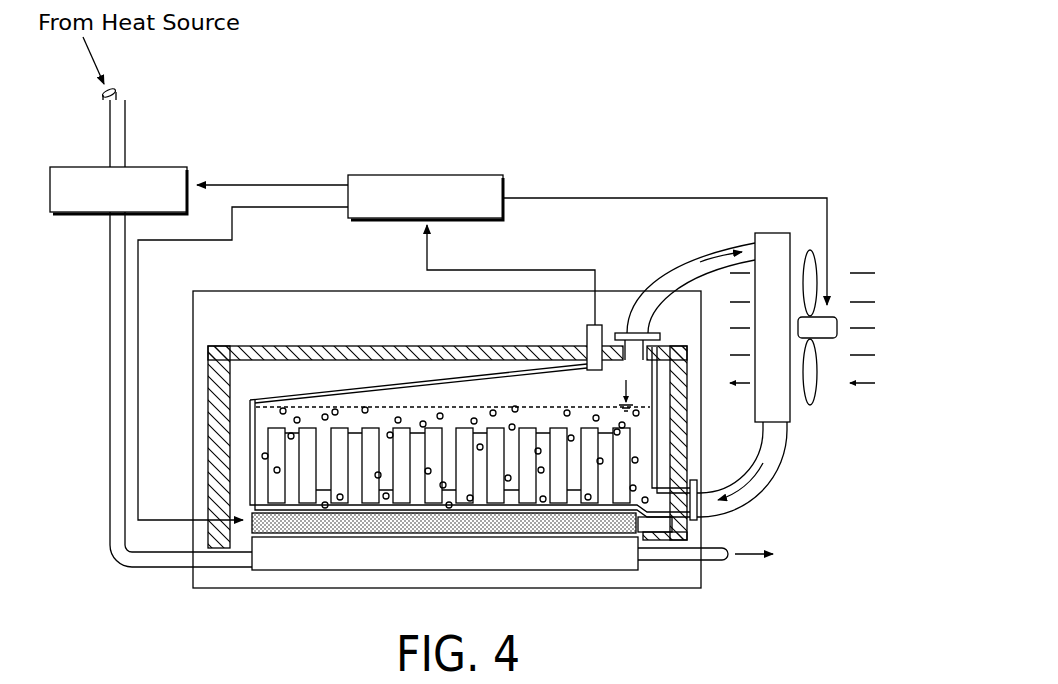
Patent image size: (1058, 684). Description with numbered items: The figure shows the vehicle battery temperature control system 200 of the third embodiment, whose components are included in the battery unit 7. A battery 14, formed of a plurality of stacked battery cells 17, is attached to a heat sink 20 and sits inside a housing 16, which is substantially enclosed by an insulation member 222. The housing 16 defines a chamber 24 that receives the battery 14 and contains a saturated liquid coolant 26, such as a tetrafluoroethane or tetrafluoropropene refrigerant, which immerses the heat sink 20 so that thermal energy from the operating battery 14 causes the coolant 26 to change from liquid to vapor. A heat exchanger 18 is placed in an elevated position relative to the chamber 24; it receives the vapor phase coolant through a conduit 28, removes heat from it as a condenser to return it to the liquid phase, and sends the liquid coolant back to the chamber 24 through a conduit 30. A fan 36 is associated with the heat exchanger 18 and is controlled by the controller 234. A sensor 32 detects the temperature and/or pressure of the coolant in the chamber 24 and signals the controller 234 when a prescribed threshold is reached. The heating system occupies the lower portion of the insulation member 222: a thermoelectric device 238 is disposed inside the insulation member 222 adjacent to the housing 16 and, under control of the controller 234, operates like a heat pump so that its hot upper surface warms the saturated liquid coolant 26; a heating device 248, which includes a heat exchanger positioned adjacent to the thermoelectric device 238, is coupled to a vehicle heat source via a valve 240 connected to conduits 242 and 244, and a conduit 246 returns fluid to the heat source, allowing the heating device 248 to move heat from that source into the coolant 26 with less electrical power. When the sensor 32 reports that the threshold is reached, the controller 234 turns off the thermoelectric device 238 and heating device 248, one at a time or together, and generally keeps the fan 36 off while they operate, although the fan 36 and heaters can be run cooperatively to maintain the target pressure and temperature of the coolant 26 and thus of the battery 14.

The battery unit 7 is at (215, 590).
The battery 14 is at (260, 426).
The housing 16 is at (322, 390).
The stacked battery cells 17 is at (293, 437).
The heat exchanger 18 is at (790, 417).
The heat sink 20 is at (268, 445).
The chamber 24 is at (509, 398).
The saturated liquid coolant 26 is at (437, 405).
The conduit 28 is at (703, 257).
The conduit 30 is at (770, 475).
The sensor 32 is at (606, 325).
The fan 36 is at (838, 322).
The vehicle battery temperature control system 200 is at (735, 157).
The insulation member 222 is at (305, 346).
The controller 234 is at (437, 175).
The thermoelectric device 238 is at (617, 530).
The valve 240 is at (167, 172).
The conduit 242 is at (108, 143).
The conduit 244 is at (110, 483).
The conduit 246 is at (678, 567).
The heating device 248 is at (350, 570).